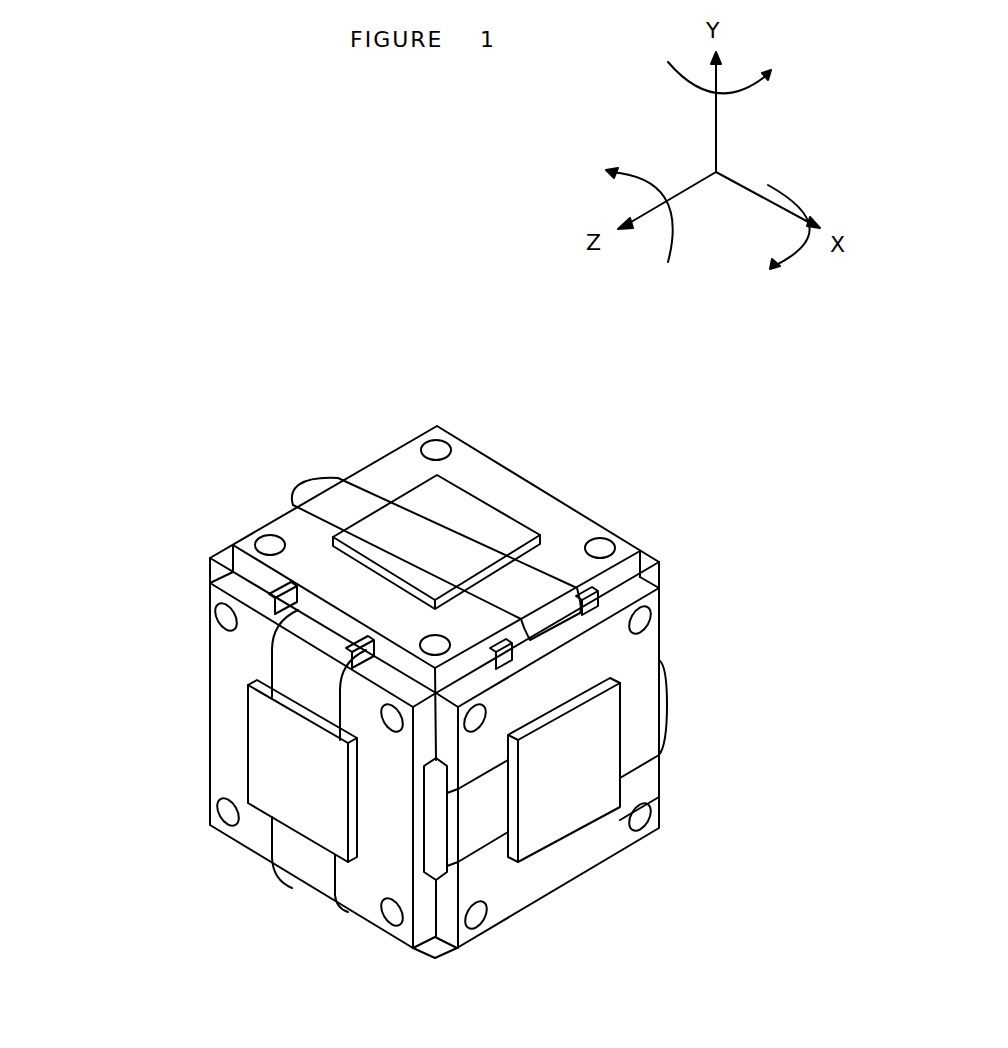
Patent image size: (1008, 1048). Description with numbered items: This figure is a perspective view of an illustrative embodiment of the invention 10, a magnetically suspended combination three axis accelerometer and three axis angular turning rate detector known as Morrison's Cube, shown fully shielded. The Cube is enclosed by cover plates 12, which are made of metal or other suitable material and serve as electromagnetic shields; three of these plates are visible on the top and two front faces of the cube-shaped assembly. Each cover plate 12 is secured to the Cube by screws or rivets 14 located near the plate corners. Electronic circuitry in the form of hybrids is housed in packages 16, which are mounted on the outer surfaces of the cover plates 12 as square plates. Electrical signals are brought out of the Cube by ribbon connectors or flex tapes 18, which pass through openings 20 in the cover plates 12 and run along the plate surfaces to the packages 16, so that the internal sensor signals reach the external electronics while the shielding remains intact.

The invention 10 is at (645, 502).
The cover plates 12 is at (480, 468).
The screws or rivets 14 is at (603, 551).
The packages 16 is at (482, 527).
The ribbon connectors or flex tapes 18 is at (335, 498).
The openings 20 is at (598, 600).